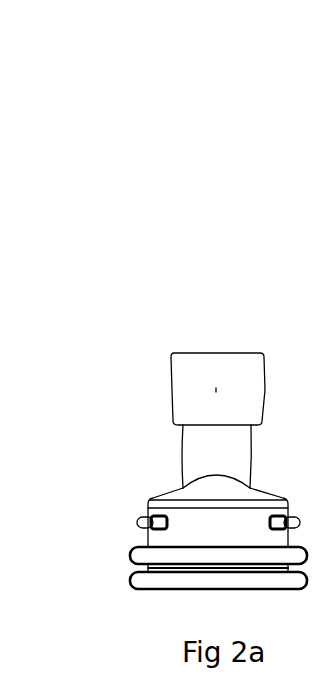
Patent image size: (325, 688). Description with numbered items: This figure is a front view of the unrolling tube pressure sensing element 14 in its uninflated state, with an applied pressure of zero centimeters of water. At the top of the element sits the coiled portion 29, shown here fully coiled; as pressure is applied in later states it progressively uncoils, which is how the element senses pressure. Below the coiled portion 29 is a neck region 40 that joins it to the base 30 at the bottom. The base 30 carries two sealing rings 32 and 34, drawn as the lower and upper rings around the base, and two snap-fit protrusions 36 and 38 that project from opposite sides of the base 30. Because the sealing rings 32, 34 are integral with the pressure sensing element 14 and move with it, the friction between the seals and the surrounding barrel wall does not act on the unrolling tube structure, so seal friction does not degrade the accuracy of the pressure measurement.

The unrolling tube pressure sensing element 14 is at (133, 368).
The coiled portion 29 is at (197, 398).
The neck 40 is at (200, 454).
The base 30 is at (120, 499).
The snap-fit protrusion 36 is at (290, 516).
The snap-fit protrusion 38 is at (137, 522).
The sealing ring 34 is at (130, 553).
The sealing ring 32 is at (132, 580).